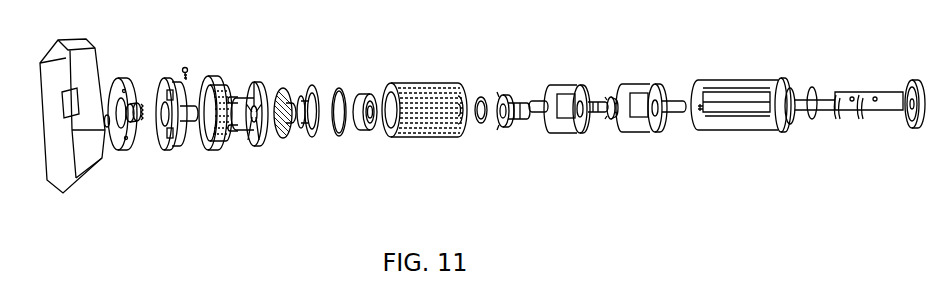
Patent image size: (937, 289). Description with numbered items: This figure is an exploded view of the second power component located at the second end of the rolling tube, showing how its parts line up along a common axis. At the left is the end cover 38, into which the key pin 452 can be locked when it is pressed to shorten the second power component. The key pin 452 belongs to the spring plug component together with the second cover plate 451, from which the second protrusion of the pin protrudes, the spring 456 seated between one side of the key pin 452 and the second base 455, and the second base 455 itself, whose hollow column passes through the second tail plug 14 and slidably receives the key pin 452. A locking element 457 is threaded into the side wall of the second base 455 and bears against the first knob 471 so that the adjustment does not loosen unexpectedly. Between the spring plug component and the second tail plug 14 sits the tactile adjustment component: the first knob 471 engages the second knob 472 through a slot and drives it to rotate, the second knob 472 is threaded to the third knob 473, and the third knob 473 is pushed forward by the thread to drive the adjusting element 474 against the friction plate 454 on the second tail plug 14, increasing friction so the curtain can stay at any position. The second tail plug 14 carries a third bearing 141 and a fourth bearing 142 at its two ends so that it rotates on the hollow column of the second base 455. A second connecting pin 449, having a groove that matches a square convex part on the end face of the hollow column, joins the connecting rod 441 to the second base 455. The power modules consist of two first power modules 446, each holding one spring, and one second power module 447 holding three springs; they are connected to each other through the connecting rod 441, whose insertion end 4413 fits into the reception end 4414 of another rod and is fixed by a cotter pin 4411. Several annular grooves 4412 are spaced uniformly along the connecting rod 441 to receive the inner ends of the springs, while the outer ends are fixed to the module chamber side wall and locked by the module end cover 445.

The end cover 38 is at (97, 73).
The key pin 452 is at (104, 124).
The second cover plate 451 is at (122, 152).
The spring 456 is at (139, 102).
The locking element 457 is at (185, 67).
The second base 455 is at (163, 152).
The first knob 471 is at (212, 152).
The second knob 472 is at (242, 81).
The third knob 473 is at (281, 140).
The adjusting element 474 is at (308, 86).
The friction plate 454 is at (338, 137).
The fourth bearing 142 is at (371, 130).
The second tail plug 14 is at (413, 84).
The third bearing 141 is at (481, 97).
The cotter pin 4411 is at (512, 96).
The second connecting pin 449 is at (502, 125).
The first power module 446 is at (556, 128).
The insertion end 4413 is at (599, 101).
The reception end 4414 is at (610, 118).
The second power module 447 is at (718, 128).
The annular groove 4412 is at (802, 100).
The connecting rod 441 is at (813, 111).
The module end cover 445 is at (885, 89).